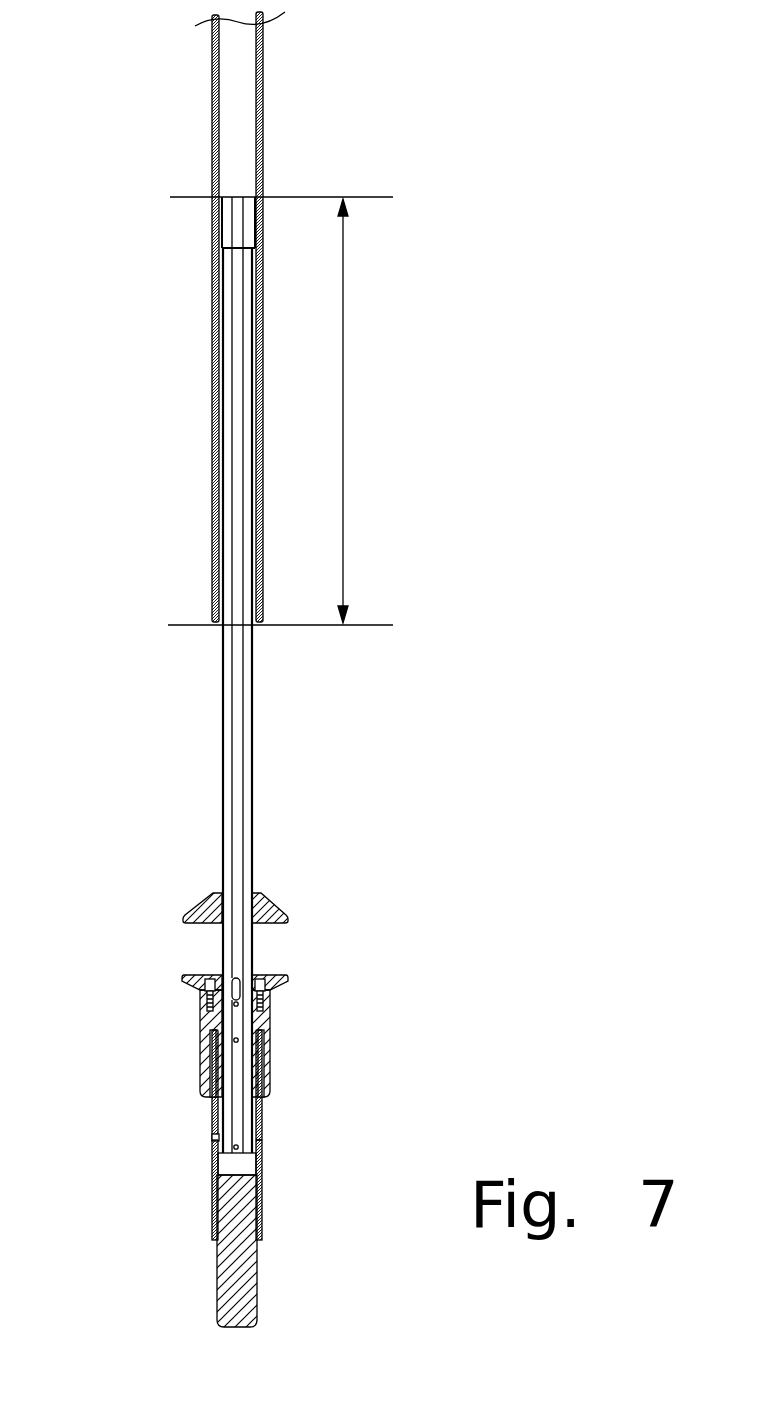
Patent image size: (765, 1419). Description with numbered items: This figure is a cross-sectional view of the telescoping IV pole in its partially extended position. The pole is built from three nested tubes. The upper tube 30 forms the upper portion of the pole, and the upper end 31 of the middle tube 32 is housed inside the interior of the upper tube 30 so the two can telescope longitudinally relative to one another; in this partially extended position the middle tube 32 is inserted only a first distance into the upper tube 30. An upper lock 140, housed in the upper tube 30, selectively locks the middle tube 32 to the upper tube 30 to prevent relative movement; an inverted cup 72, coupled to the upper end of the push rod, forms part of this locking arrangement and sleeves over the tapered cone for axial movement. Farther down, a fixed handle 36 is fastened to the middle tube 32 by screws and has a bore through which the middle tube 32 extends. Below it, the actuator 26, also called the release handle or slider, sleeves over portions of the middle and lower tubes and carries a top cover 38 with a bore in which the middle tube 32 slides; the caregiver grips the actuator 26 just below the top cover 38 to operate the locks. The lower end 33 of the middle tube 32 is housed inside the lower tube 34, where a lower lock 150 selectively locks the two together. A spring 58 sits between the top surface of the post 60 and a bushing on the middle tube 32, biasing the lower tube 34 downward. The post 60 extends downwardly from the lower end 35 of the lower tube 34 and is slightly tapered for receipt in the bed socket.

The upper tube 30 is at (263, 90).
The upper lock 140 is at (200, 215).
The inverted cup 72 is at (230, 225).
The upper end of the middle tube 31 is at (235, 343).
The middle tube 32 is at (255, 742).
The fixed handle 36 is at (273, 910).
The top cover 38 is at (285, 975).
The actuator 26 is at (295, 1031).
The lower lock 150 is at (180, 1052).
The lower end of the middle tube 33 is at (232, 1117).
The lower tube 34 is at (262, 1138).
The spring 58 is at (218, 1165).
The lower end of the lower tube 35 is at (262, 1205).
The post 60 is at (227, 1260).